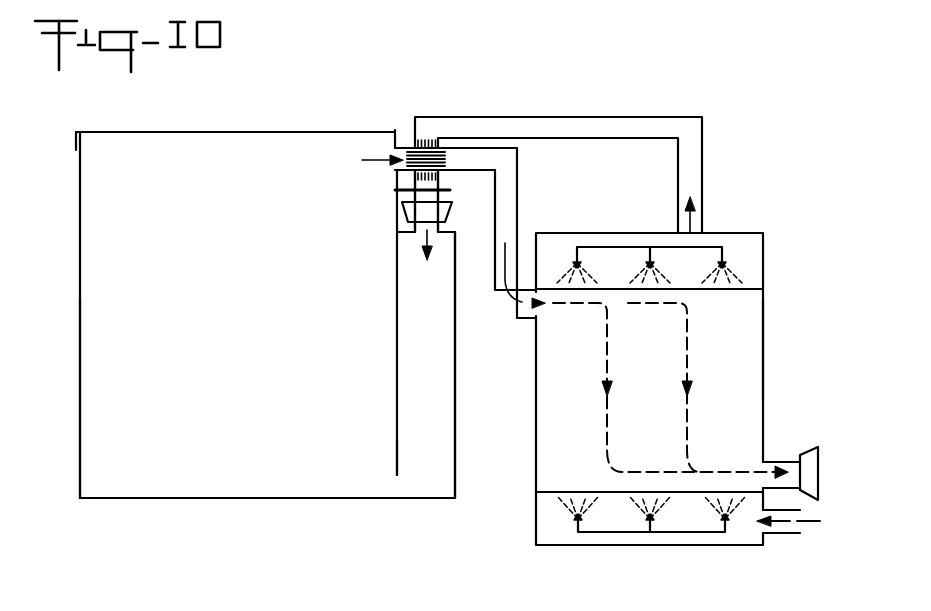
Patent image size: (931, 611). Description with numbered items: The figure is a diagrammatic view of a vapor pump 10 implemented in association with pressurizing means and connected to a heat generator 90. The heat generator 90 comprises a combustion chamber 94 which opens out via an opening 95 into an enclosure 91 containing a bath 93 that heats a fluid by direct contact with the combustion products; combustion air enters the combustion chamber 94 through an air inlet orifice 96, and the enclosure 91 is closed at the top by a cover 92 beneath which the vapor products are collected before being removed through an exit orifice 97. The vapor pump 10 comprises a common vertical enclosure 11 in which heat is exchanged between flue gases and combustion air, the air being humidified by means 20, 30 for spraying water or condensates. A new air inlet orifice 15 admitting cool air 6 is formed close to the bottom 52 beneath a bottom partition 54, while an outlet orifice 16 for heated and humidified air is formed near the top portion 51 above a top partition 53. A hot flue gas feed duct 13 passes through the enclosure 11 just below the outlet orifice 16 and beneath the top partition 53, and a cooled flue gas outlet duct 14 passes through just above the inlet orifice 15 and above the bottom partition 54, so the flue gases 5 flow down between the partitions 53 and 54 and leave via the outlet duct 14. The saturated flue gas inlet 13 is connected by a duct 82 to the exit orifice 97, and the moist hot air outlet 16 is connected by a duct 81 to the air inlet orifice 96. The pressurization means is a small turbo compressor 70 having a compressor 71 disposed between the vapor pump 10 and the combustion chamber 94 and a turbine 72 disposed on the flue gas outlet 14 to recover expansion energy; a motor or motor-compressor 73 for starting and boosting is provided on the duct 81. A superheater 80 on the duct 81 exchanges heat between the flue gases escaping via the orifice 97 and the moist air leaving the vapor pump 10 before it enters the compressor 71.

The flue gases 5 is at (761, 463).
The cool air 6 is at (812, 524).
The vapor pump 10 is at (712, 225).
The common vertical enclosure 11 is at (765, 348).
The hot flue gas feed duct 13 is at (508, 320).
The cooled flue gas outlet duct 14 is at (790, 458).
The new air inlet orifice 15 is at (782, 537).
The heated air outlet orifice 16 is at (707, 229).
The water spraying means 20 is at (627, 246).
The water spraying means 30 is at (637, 536).
The top portion 51 is at (592, 232).
The bottom 52 is at (702, 548).
The top partition 53 is at (758, 287).
The bottom partition 54 is at (543, 495).
The turbo compressor 70 is at (392, 231).
The compressor 71 is at (410, 207).
The turbine 72 is at (813, 468).
The motor-compressor 73 is at (395, 190).
The superheater 80 is at (445, 166).
The duct 81 is at (703, 153).
The duct 82 is at (493, 258).
The heat generator 90 is at (76, 297).
The enclosure 91 is at (79, 430).
The cover 92 is at (262, 131).
The bath 93 is at (355, 483).
The combustion chamber 94 is at (396, 397).
The opening 95 is at (398, 478).
The air inlet orifice 96 is at (414, 252).
The exit orifice 97 is at (404, 145).